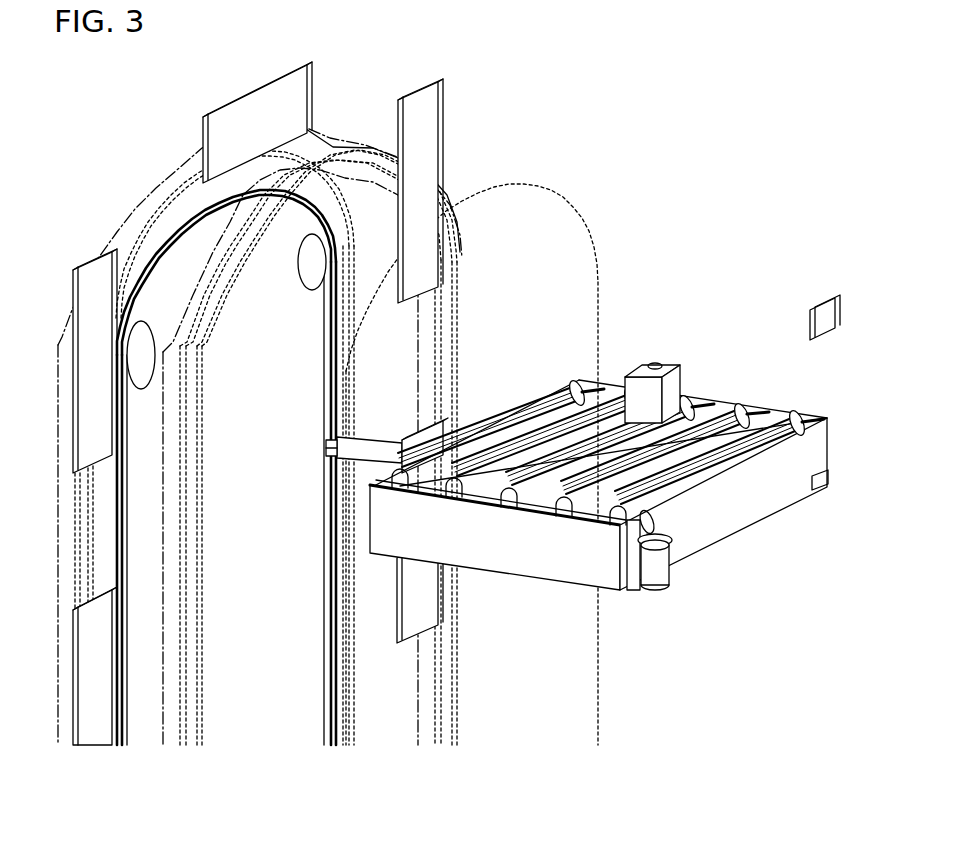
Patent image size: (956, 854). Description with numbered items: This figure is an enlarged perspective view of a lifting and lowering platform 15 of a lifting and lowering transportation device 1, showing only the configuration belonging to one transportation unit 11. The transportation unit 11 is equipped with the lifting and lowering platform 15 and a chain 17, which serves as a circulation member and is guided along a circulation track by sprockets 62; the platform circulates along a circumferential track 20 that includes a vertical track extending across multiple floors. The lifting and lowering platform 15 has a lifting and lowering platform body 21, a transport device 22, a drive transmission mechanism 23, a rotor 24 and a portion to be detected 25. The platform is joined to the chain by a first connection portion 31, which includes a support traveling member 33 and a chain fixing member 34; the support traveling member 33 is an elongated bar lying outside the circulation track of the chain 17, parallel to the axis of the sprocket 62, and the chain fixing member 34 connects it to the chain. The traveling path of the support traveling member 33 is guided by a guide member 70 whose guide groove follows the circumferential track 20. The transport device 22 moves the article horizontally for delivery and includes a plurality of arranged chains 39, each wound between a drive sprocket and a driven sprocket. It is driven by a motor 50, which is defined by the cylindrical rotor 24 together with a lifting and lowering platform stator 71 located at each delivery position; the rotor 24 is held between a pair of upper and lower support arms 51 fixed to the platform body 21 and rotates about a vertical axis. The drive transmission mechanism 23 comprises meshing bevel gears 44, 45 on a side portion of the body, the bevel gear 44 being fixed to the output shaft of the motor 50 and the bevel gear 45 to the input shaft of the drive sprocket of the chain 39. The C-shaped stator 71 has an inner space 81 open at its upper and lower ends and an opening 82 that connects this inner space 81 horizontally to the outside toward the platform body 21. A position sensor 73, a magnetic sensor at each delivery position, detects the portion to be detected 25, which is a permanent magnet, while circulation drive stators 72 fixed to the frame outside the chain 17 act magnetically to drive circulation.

The lifting and lowering transportation device 1 is at (770, 112).
The transportation unit 11 is at (603, 165).
The lifting and lowering platform 15 is at (607, 517).
The chain 17 is at (192, 226).
The circumferential track 20 is at (603, 708).
The lifting and lowering platform body 21 is at (493, 550).
The transport device 22 is at (508, 408).
The drive transmission mechanism 23 is at (685, 521).
The rotor 24 is at (707, 571).
The portion to be detected 25 is at (829, 490).
The first connection portion 31 is at (349, 445).
The support traveling member 33 is at (340, 493).
The chain fixing member 34 is at (323, 443).
The chain 39 is at (785, 412).
The bevel gear 44 is at (675, 566).
The bevel gear 45 is at (655, 525).
The motor 50 is at (762, 422).
The support arm 51 is at (627, 560).
The sprocket 62 is at (292, 260).
The guide member 70 is at (312, 725).
The lifting and lowering platform stator 71 is at (690, 390).
The circulation drive stator 72 is at (100, 282).
The position sensor 73 is at (822, 312).
The inner space 81 is at (662, 353).
The opening 82 is at (637, 364).